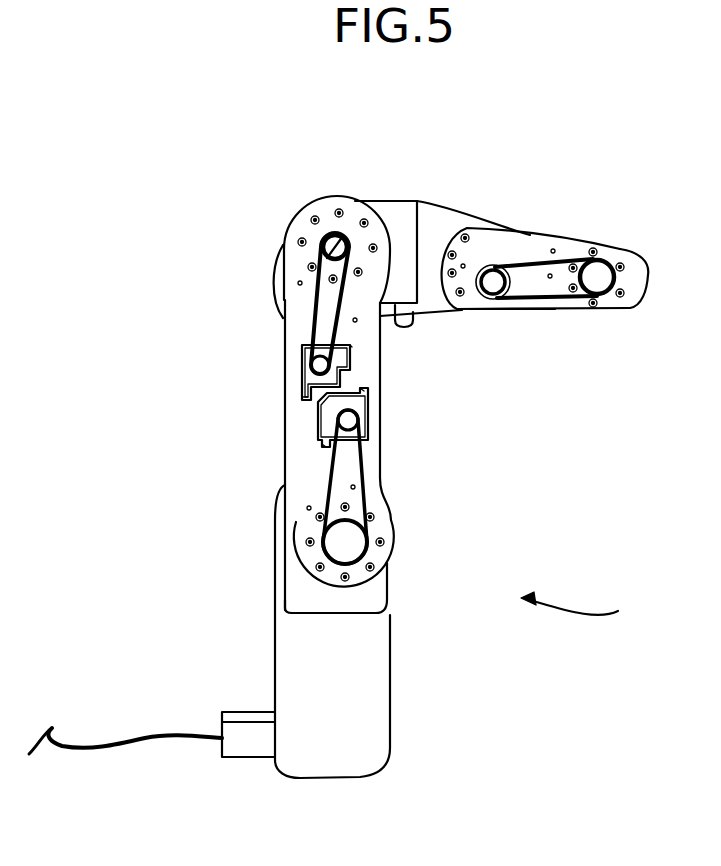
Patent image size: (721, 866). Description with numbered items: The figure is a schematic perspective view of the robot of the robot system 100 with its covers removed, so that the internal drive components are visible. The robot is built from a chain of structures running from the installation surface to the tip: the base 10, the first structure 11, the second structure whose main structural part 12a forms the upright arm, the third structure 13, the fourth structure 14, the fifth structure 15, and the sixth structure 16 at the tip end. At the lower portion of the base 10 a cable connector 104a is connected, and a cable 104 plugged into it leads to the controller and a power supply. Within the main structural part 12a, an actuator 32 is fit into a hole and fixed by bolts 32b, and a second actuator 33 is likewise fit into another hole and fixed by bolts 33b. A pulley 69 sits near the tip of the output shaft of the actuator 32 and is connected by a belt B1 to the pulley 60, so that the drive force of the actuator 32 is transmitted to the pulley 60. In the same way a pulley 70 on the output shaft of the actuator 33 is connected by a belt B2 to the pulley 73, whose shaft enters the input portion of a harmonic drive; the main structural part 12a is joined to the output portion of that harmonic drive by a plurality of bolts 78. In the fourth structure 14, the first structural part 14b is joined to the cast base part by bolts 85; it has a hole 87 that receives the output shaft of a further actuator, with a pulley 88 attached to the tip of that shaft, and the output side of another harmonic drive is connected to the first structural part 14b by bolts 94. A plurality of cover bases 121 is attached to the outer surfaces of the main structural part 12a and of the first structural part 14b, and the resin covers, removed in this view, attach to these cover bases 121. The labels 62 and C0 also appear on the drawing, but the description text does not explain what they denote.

The robot system 100 is at (591, 608).
The base 10 is at (283, 652).
The first structure 11 is at (283, 565).
The main structural part 12a is at (296, 464).
The third structure 13 is at (393, 228).
The fourth structure 14 is at (440, 221).
The first structural part 14b is at (553, 311).
The fifth structure 15 is at (550, 210).
The sixth structure 16 is at (648, 272).
The actuator 32 is at (366, 398).
The bolts 32b is at (364, 391).
The actuator 33 is at (307, 370).
The bolts 33b is at (306, 397).
The pulley 60 is at (372, 518).
The flange 62 is at (385, 542).
The pulley 69 is at (360, 427).
The pulley 70 is at (311, 343).
The pulley 73 is at (347, 243).
The bolts 78 is at (298, 242).
The bolts 85 is at (462, 296).
The hole 87 is at (493, 266).
The pulley 88 is at (505, 302).
The bolts 94 is at (620, 294).
The cable 104 is at (133, 736).
The cable connector 104a is at (247, 717).
The cover bases 121 is at (298, 283).
The belt B1 is at (375, 494).
The belt B2 is at (316, 338).
The cover portion C0 is at (277, 524).